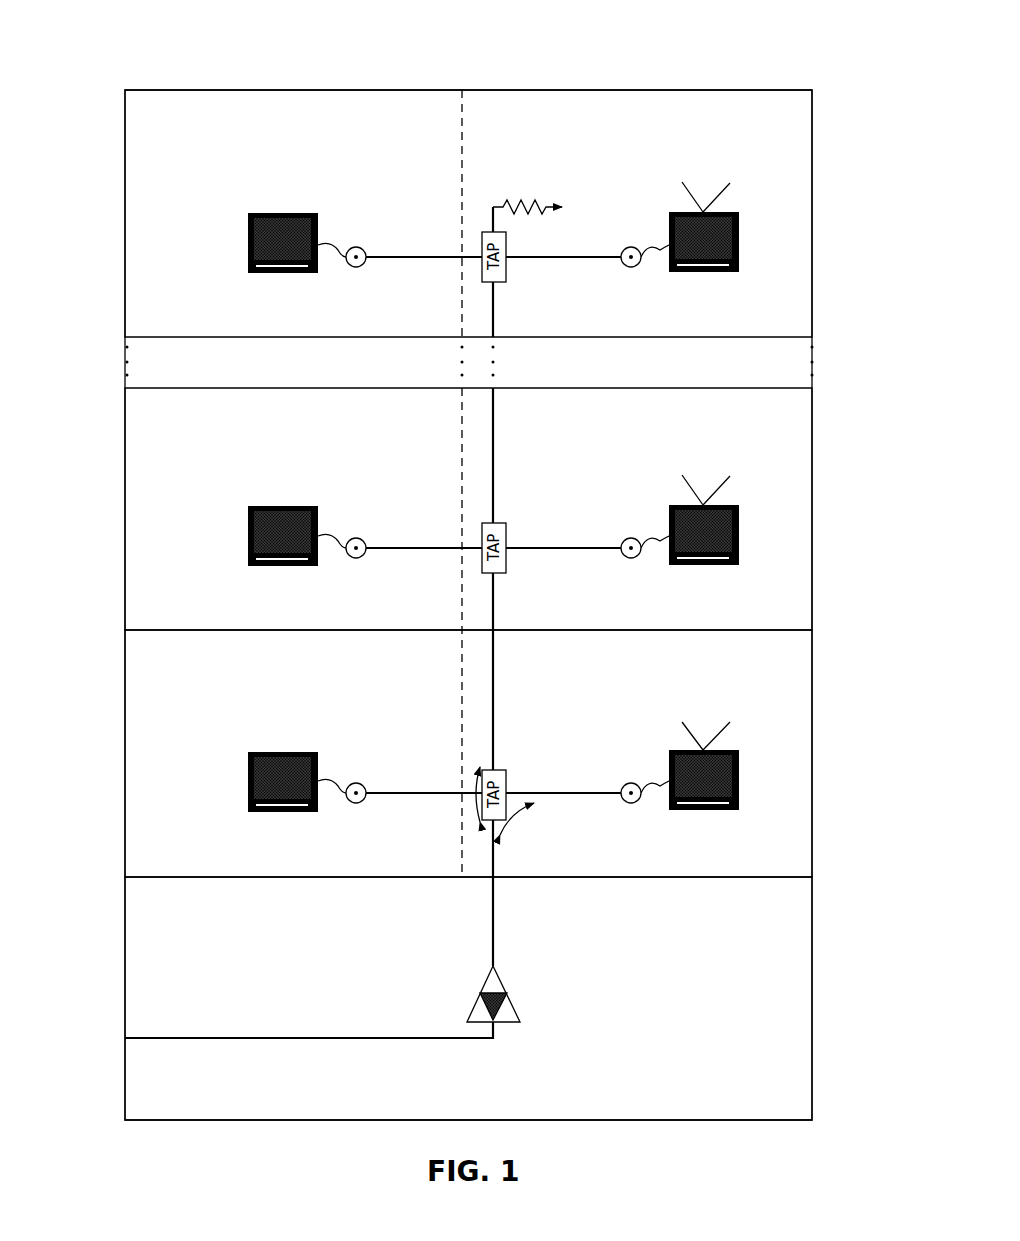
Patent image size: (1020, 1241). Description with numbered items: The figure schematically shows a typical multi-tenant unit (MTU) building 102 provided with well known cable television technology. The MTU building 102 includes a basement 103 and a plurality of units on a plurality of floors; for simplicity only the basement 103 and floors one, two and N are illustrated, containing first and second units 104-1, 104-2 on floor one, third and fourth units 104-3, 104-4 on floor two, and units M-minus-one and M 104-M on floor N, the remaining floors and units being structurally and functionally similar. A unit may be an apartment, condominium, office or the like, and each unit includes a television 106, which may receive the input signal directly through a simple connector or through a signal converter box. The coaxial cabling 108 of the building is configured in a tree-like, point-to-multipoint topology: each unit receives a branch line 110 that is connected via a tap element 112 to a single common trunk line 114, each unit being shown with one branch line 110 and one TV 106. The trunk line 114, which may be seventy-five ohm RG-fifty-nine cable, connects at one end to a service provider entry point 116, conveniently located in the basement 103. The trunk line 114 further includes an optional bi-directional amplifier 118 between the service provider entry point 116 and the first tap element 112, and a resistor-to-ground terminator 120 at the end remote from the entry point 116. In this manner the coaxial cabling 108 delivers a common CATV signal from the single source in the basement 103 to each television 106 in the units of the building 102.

The multi-tenant unit (MTU) building 102 is at (803, 56).
The basement level 103 is at (122, 953).
The unit M 104-M is at (815, 171).
The unit 1 104-1 is at (122, 709).
The unit 2 104-2 is at (815, 709).
The unit 3 104-3 is at (122, 586).
The unit 4 104-4 is at (815, 586).
The television (TV) 106 is at (284, 213).
The coaxial cabling 108 is at (497, 920).
The branch line 110 is at (428, 257).
The tap element 112 is at (500, 282).
The trunk line 114 is at (494, 428).
The service provider entry point 116 is at (126, 1037).
The bi-directional amplifier 118 is at (520, 1023).
The terminator 120 is at (513, 175).